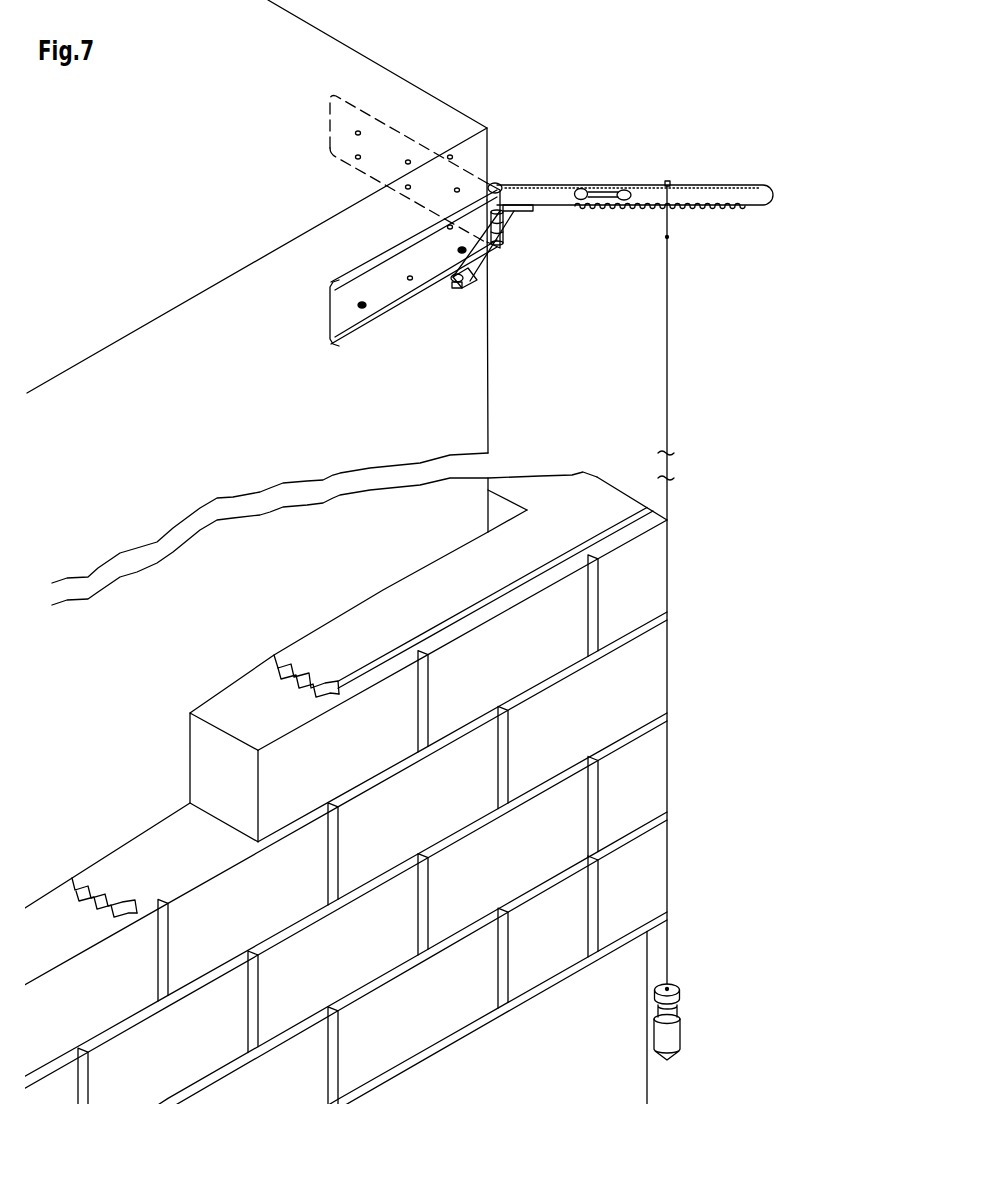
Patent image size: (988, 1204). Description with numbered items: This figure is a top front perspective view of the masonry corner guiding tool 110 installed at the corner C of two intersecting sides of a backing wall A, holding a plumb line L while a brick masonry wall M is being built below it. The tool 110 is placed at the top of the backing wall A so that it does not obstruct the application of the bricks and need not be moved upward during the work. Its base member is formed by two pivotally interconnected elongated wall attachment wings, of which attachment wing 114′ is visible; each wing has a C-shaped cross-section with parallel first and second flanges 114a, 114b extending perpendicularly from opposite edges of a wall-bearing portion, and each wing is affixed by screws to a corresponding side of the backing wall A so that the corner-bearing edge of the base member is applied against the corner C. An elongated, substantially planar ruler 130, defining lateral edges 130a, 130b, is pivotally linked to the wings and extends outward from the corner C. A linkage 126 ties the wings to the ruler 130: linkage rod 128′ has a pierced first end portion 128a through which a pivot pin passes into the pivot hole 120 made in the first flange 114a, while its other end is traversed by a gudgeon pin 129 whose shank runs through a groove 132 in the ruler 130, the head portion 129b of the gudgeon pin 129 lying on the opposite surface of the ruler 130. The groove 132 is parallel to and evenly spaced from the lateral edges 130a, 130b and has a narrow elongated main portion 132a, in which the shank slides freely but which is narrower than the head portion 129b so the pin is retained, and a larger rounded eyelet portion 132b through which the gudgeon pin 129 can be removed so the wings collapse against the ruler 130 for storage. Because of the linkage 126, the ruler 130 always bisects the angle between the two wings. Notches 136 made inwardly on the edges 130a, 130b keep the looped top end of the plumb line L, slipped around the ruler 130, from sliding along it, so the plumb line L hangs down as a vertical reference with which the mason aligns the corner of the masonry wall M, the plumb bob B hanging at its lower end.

The masonry corner guiding tool 110 is at (535, 146).
The attachment wing 114′ is at (373, 205).
The first flange 114a is at (375, 328).
The second flange 114b is at (372, 273).
The pivot hole 120 is at (501, 325).
The linkage 126 is at (532, 256).
The linkage rod 128′ is at (511, 268).
The first end portion 128a is at (459, 286).
The gudgeon pin 129 is at (558, 165).
The head portion 129b is at (580, 186).
The ruler 130 is at (671, 162).
The lateral edge 130a is at (684, 185).
The lateral edge 130b is at (705, 207).
The groove 132 is at (640, 152).
The main portion 132a is at (613, 188).
The eyelet portion 132b is at (626, 190).
The notch 136 is at (720, 185).
The backing wall A is at (165, 343).
The plumb bob B is at (672, 1030).
The corner C is at (490, 185).
The plumb line L is at (670, 396).
The masonry wall M is at (638, 680).